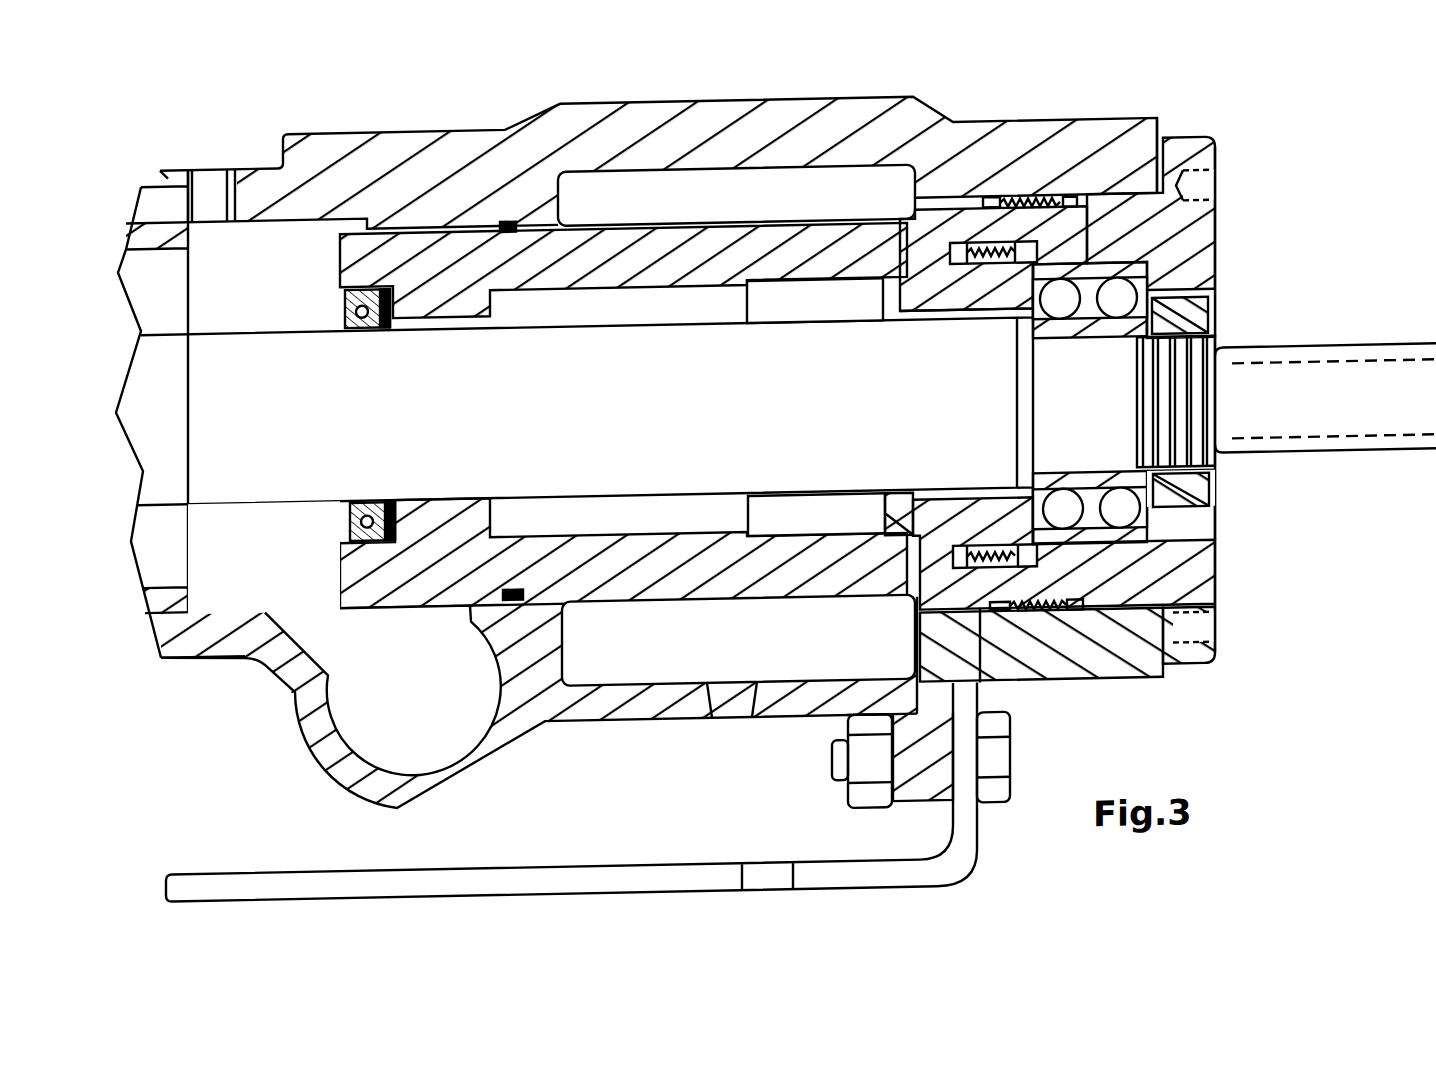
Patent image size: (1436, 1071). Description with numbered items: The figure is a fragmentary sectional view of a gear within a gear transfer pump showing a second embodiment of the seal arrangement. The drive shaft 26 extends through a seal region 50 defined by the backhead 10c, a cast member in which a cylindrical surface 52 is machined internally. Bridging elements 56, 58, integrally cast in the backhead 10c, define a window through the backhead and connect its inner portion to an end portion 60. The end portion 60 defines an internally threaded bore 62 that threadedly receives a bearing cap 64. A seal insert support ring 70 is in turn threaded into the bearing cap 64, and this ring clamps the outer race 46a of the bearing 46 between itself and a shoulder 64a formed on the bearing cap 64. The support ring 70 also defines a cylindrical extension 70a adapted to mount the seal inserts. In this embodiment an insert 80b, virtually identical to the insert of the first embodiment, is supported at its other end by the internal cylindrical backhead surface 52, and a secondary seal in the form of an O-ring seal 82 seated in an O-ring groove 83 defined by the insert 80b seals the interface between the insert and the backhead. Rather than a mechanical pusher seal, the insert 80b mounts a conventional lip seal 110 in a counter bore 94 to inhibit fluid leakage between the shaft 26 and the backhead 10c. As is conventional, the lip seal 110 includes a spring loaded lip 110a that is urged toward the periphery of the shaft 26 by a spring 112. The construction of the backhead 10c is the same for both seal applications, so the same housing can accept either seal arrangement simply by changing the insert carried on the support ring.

The backhead 10c is at (770, 93).
The shaft 26 is at (670, 421).
The bearing 46 is at (1098, 482).
The outer race 46a is at (1170, 569).
The seal region 50 is at (828, 185).
The cylindrical surface 52 is at (598, 583).
The bridging element 56 is at (652, 114).
The bridging element 58 is at (615, 715).
The end portion 60 is at (1100, 123).
The internally threaded bore 62 is at (1035, 204).
The bearing cap 64 is at (1183, 240).
The shoulder 64a is at (1152, 304).
The seal insert support ring 70 is at (970, 525).
The cylindrical extension 70a is at (902, 501).
The insert 80b is at (608, 273).
The O-ring seal 82 is at (518, 601).
The O-ring groove 83 is at (505, 218).
The counter bore 94 is at (385, 496).
The lip seal 110 is at (372, 328).
The spring loaded lip 110a is at (360, 495).
The spring 112 is at (348, 305).